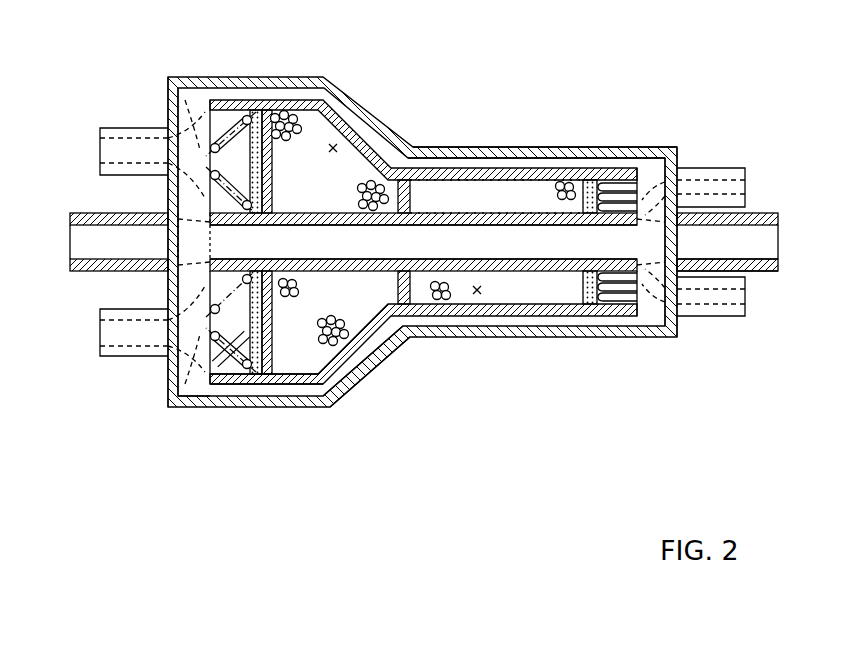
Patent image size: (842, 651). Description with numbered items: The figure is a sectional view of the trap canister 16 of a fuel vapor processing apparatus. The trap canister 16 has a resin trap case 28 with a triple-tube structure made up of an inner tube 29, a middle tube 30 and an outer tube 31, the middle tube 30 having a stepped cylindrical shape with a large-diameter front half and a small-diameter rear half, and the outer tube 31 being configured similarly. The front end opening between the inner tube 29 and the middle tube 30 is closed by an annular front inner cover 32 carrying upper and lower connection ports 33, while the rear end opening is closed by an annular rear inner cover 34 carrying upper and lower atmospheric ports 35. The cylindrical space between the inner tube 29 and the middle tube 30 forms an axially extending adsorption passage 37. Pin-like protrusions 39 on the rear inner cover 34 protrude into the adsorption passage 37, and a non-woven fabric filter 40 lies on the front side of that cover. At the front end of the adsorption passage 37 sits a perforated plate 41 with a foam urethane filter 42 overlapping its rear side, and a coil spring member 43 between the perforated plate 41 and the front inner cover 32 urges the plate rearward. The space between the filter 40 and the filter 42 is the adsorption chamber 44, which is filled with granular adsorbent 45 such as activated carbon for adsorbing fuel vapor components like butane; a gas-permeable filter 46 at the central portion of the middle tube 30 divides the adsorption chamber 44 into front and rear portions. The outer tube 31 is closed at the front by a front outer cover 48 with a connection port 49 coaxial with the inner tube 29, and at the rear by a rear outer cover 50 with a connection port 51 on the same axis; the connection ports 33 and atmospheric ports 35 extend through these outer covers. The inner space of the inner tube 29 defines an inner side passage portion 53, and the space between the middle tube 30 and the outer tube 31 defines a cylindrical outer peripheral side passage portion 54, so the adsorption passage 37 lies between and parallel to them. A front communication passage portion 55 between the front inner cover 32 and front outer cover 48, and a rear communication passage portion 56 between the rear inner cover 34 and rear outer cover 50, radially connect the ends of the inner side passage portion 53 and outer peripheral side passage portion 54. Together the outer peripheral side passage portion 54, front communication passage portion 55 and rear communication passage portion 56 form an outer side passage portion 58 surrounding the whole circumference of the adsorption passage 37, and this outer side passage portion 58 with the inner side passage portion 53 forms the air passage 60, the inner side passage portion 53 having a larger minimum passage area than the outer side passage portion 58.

The trap canister 16 is at (632, 62).
The trap case 28 is at (166, 74).
The inner tube 29 is at (456, 203).
The middle tube 30 is at (499, 158).
The outer tube 31 is at (542, 153).
The front inner cover 32 is at (193, 140).
The connection ports 33 is at (130, 130).
The rear inner cover 34 is at (650, 190).
The atmospheric ports 35 is at (712, 178).
The adsorption passage 37 is at (477, 294).
The pin-like protrusions 39 is at (615, 185).
The filter 40 is at (590, 182).
The perforated plate 41 is at (248, 116).
The filter 42 is at (268, 110).
The spring member 43 is at (252, 112).
The adsorption chamber 44 is at (335, 146).
The adsorbent 45 is at (378, 184).
The filter 46 is at (405, 182).
The front outer cover 48 is at (170, 374).
The connection port 49 is at (78, 212).
The rear outer cover 50 is at (672, 314).
The connection port 51 is at (752, 273).
The inner side passage portion 53 is at (535, 246).
The outer peripheral side passage portion 54 is at (393, 345).
The front communication passage portion 55 is at (195, 336).
The rear communication passage portion 56 is at (648, 300).
The outer side passage portion 58 is at (297, 392).
The air passage 60 is at (201, 390).